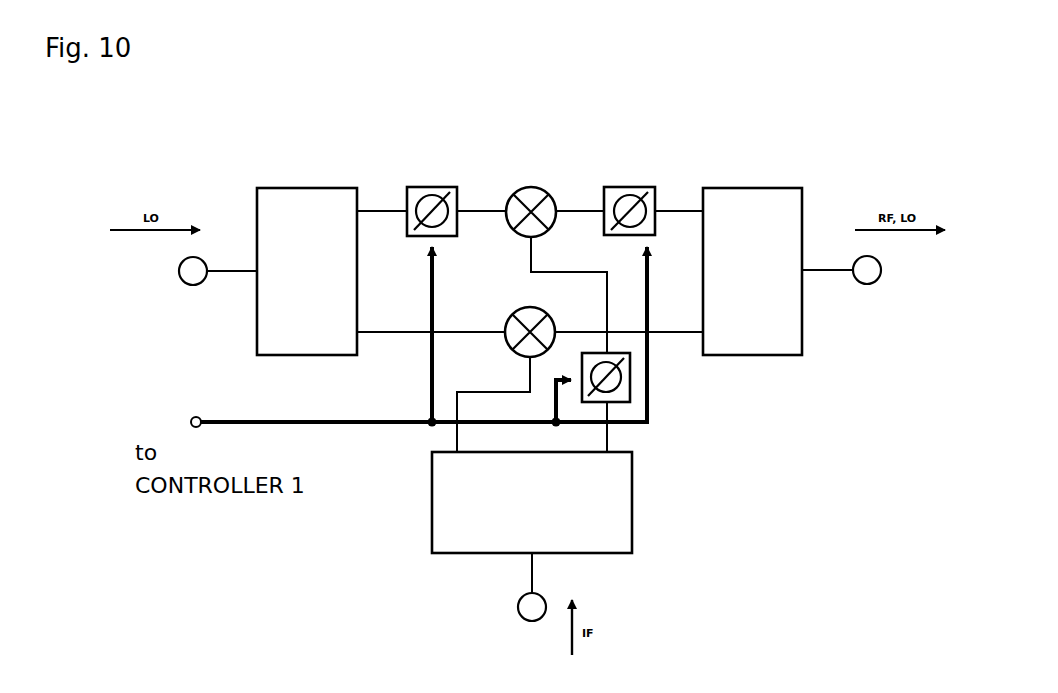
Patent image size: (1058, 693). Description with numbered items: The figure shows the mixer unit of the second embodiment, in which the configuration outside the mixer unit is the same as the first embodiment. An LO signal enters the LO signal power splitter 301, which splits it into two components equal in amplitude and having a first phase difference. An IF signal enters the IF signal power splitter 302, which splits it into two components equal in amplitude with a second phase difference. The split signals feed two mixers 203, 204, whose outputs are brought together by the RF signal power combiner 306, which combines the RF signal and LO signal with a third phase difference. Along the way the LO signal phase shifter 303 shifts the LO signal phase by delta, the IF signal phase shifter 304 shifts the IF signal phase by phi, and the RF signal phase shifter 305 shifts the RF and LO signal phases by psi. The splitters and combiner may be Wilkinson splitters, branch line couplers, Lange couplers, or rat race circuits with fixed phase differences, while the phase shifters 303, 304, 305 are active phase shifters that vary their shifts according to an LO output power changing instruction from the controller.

The LO signal power splitter 301 is at (295, 188).
The IF signal power splitter 302 is at (632, 535).
The LO signal phase shifter 303 is at (430, 187).
The IF signal phase shifter 304 is at (631, 379).
The RF signal phase shifter 305 is at (617, 187).
The RF signal power combiner 306 is at (740, 188).
The mixer 203 is at (531, 187).
The mixer 204 is at (528, 308).